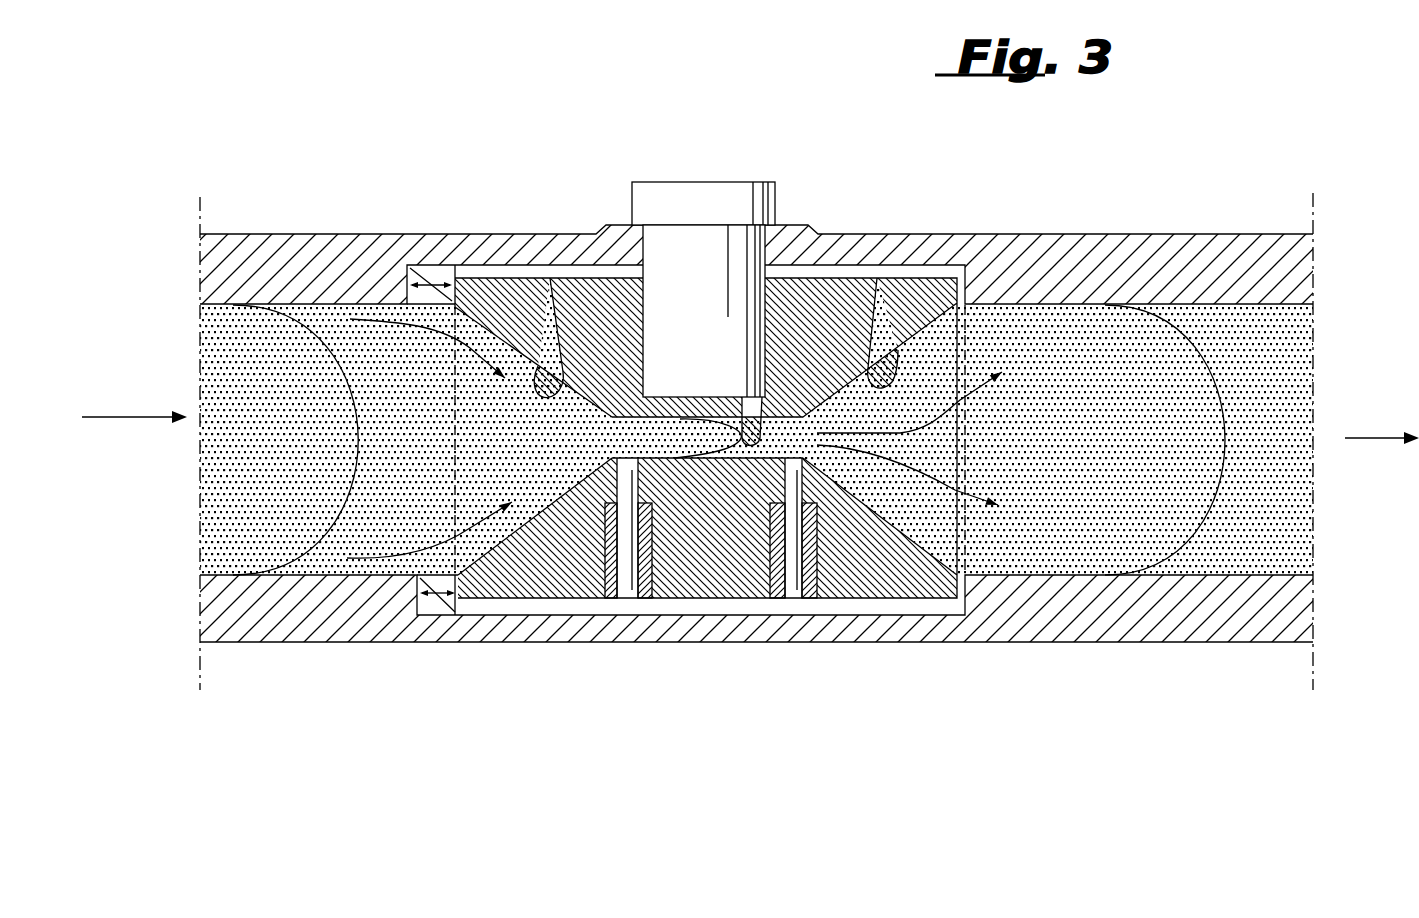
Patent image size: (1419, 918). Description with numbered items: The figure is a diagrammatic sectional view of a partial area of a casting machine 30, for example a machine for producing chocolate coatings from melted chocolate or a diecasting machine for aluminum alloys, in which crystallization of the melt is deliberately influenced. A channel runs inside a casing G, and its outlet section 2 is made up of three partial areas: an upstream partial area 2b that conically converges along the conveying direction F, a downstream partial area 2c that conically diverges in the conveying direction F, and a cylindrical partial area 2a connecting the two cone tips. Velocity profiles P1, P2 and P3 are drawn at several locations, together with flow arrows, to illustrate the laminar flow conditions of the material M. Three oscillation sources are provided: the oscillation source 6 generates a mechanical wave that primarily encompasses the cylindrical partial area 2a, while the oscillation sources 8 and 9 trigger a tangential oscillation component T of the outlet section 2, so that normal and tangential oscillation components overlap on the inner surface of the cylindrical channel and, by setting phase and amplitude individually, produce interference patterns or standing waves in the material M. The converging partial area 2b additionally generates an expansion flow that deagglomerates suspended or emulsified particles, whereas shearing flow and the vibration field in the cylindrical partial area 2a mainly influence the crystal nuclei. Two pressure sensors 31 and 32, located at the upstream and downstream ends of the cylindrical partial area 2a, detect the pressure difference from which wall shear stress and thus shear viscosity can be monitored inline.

The casting machine 30 is at (318, 232).
The casing G is at (1115, 264).
The outlet section 2 is at (690, 620).
The cylindrical partial area 2a is at (742, 400).
The conically converging partial area 2b is at (550, 290).
The conically diverging partial area 2c is at (870, 362).
The oscillation source 6 is at (710, 198).
The oscillation source 8 is at (440, 284).
The oscillation source 9 is at (445, 600).
The tangential oscillation component T is at (428, 282).
The first pressure sensor 31 is at (630, 600).
The second pressure sensor 32 is at (790, 600).
The material M is at (225, 363).
The conveying direction F is at (750, 408).
The velocity profile P1 is at (305, 548).
The velocity profile P2 is at (742, 460).
The velocity profile P3 is at (1185, 528).